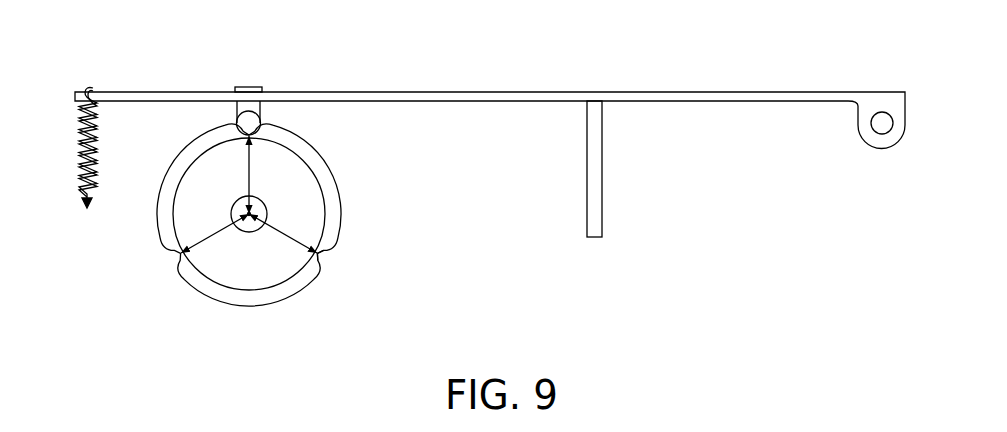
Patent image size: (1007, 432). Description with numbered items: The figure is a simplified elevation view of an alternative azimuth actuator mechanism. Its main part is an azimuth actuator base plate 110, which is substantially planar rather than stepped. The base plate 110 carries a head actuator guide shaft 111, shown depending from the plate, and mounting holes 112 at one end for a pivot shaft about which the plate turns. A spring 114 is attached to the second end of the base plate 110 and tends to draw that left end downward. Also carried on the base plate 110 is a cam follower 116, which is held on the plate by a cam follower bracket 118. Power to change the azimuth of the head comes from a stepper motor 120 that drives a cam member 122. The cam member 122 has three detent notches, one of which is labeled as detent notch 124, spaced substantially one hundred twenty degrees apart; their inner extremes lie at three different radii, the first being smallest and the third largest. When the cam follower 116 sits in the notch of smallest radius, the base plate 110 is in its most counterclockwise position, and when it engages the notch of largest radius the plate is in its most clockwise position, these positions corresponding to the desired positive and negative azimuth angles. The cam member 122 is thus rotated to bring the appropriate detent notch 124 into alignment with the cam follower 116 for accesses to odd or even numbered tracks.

The azimuth actuator base plate 110 is at (352, 92).
The head actuator guide shaft 111 is at (602, 167).
The mounting holes 112 is at (877, 132).
The spring 114 is at (78, 137).
The cam follower 116 is at (237, 120).
The cam follower bracket 118 is at (245, 86).
The stepper motor 120 is at (282, 160).
The cam member 122 is at (330, 193).
The detent notch 124 is at (318, 252).